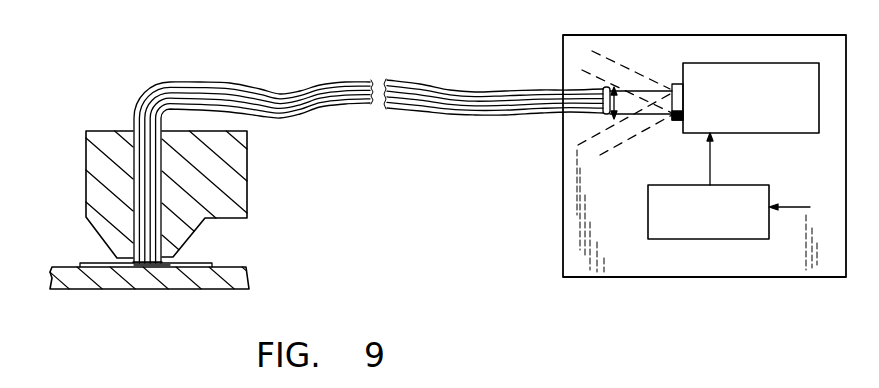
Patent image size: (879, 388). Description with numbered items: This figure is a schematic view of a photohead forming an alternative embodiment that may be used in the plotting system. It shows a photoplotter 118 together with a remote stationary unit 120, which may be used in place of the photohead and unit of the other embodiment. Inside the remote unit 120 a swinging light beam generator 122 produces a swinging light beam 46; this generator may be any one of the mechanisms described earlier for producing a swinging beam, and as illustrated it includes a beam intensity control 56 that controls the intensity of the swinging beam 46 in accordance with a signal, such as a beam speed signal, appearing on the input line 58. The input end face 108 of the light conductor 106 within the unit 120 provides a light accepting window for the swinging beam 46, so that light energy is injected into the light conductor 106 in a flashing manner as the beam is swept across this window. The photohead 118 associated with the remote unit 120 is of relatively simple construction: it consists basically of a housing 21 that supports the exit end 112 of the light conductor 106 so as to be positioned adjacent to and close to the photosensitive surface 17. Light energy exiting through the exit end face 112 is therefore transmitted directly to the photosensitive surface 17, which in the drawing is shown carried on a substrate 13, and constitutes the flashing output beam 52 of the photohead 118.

The substrate 13 is at (250, 277).
The photosensitive surface 17 is at (203, 263).
The housing 21 is at (247, 141).
The swinging light beam 46 is at (638, 73).
The flashing output beam 52 is at (172, 267).
The beam intensity control 56 is at (742, 185).
The input line 58 is at (787, 207).
The light conductor 106 is at (463, 88).
The input end face 108 is at (607, 90).
The exit end face 112 is at (142, 256).
The photoplotter 118 is at (247, 182).
The remote stationary unit 120 is at (771, 34).
The swinging light beam generator 122 is at (800, 63).